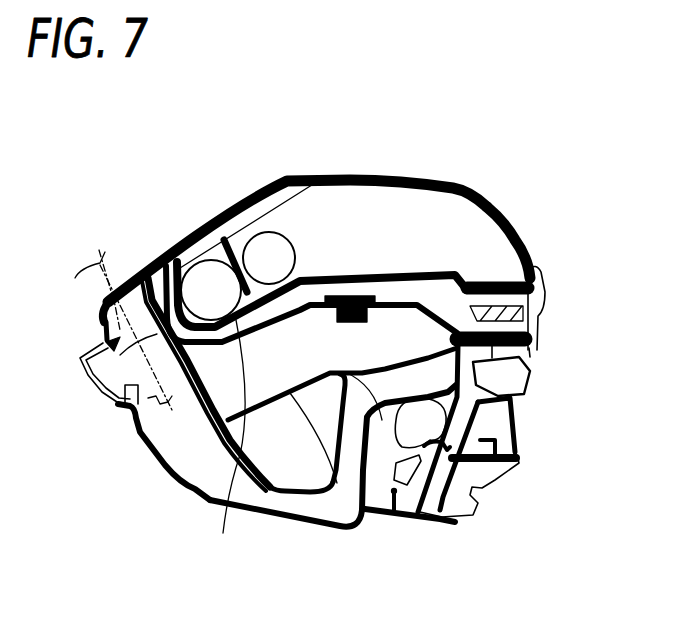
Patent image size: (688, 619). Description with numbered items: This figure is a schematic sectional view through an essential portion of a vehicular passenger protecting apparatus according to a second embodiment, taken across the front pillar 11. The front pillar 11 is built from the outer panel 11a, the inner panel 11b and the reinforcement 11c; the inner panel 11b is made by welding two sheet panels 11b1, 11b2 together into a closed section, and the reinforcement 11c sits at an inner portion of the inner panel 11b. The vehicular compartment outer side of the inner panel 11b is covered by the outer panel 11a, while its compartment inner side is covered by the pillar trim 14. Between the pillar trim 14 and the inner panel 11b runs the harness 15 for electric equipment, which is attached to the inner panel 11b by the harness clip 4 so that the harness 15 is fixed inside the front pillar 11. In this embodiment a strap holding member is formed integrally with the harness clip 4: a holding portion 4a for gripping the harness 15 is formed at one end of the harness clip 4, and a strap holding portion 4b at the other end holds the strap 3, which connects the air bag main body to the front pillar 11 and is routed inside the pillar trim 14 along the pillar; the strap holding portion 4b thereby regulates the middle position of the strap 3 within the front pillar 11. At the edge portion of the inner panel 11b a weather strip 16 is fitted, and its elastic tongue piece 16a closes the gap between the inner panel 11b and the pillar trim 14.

The strap 3 is at (519, 281).
The harness clip 4 is at (316, 374).
The holding portion 4a is at (162, 333).
The strap holding portion 4b is at (478, 268).
The front pillar 11 is at (170, 476).
The outer panel 11a is at (195, 491).
The inner panel 11b is at (268, 490).
The panel 11b1 is at (192, 400).
The panel 11b2 is at (293, 497).
The reinforcement 11c is at (331, 494).
The pillar trim 14 is at (500, 214).
The harness 15 is at (262, 258).
The weather strip 16 is at (532, 372).
The tongue piece 16a is at (543, 292).